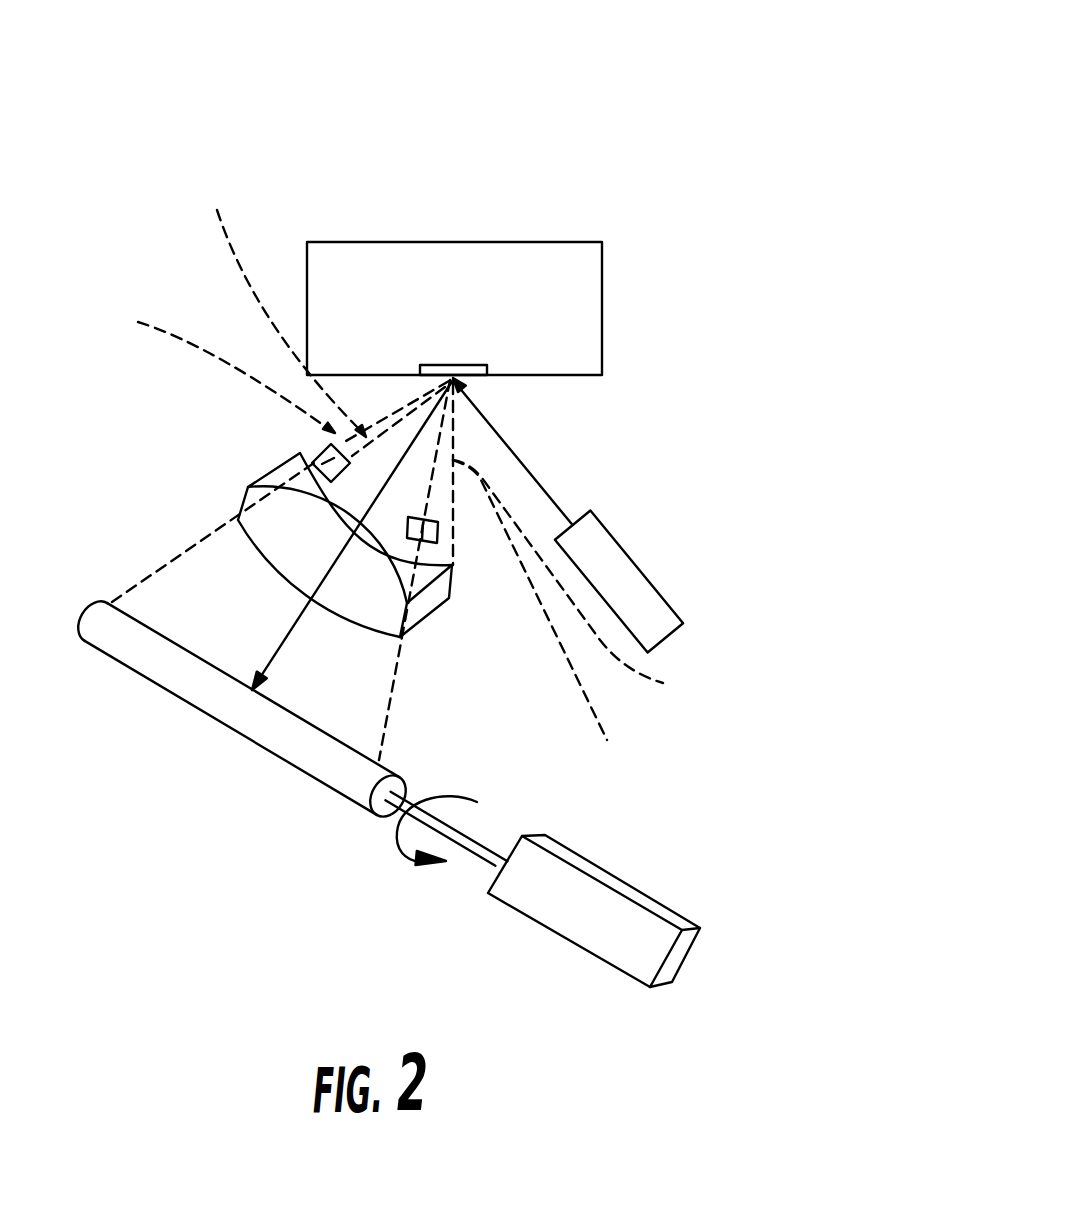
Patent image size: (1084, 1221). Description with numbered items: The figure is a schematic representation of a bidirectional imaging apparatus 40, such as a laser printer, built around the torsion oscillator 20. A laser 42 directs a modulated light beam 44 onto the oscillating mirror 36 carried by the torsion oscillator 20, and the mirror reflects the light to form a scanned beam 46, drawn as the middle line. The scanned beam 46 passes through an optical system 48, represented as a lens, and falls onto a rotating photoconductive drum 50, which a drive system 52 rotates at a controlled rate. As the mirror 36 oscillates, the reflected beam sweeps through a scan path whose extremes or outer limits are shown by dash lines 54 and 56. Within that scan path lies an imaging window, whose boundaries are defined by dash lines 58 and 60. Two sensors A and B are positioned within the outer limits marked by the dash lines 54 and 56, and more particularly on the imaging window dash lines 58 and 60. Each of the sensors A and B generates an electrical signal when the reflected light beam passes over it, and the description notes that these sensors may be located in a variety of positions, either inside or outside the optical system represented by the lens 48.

The torsion oscillator 20 is at (373, 242).
The oscillating mirror 36 is at (466, 381).
The bidirectional imaging apparatus 40 is at (876, 151).
The laser 42 is at (647, 580).
The modulated light beam 44 is at (537, 478).
The scanned beam 46 is at (287, 632).
The optical system 48 is at (260, 476).
The rotating photoconductive drum 50 is at (203, 712).
The drive system 52 is at (570, 940).
The dash line 54 is at (581, 584).
The dash line 56 is at (283, 301).
The dash line 58 is at (541, 626).
The dash line 60 is at (215, 367).
The sensor A is at (437, 537).
The sensor B is at (313, 447).